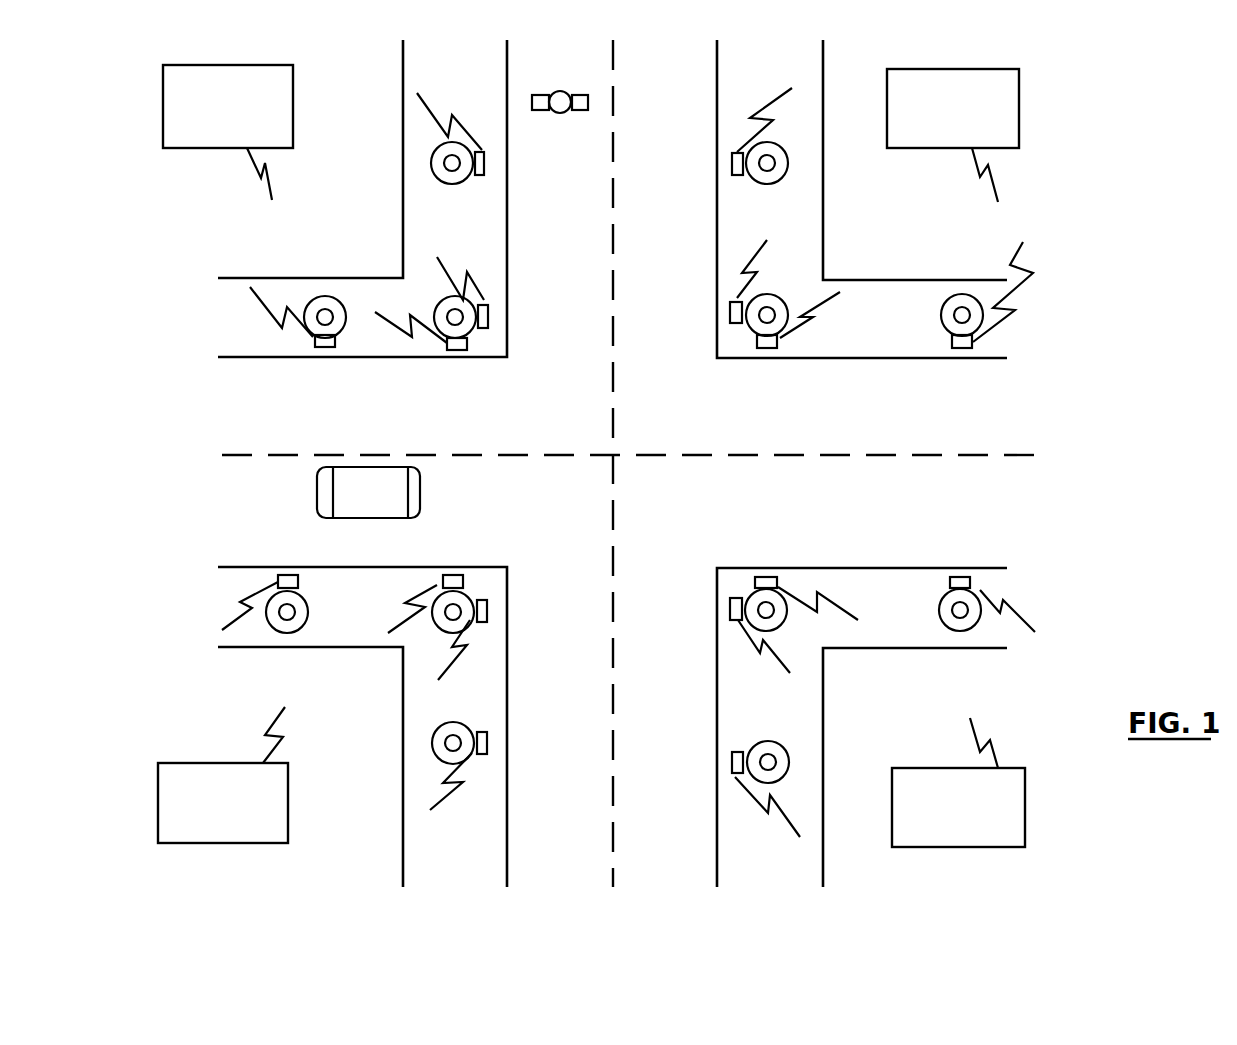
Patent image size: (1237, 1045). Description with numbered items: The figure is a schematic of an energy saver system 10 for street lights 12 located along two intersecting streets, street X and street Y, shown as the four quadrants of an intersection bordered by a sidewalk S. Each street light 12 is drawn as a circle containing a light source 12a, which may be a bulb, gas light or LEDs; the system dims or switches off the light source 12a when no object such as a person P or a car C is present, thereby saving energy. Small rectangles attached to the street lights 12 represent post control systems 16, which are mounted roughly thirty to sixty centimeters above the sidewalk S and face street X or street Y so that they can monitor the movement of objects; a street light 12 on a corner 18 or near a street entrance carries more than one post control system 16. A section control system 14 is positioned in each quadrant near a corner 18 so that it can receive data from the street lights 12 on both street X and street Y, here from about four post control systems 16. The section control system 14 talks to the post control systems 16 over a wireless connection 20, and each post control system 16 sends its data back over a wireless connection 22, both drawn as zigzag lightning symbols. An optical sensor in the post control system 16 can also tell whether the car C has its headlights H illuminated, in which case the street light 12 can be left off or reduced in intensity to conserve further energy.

The energy saver system 10 is at (165, 391).
The street light 12 is at (598, 467).
The light source 12a is at (624, 462).
The section control system 14 is at (294, 98).
The post control system 16 is at (611, 485).
The corner 18 is at (400, 278).
The wireless connection 20 is at (272, 196).
The wireless connection 22 is at (628, 469).
The car C is at (317, 497).
The headlights H is at (428, 507).
The person P is at (562, 92).
The sidewalk S is at (642, 384).
The street X is at (1007, 432).
The street Y is at (664, 92).